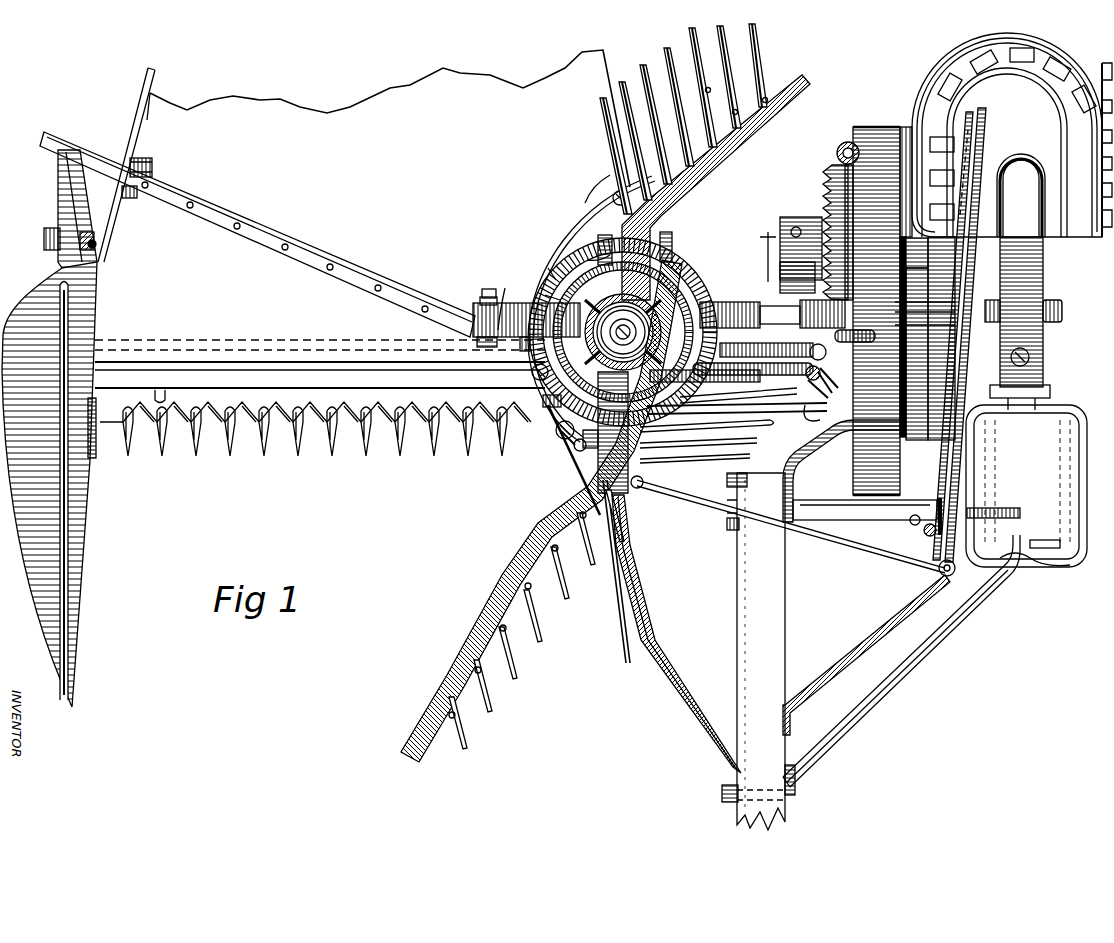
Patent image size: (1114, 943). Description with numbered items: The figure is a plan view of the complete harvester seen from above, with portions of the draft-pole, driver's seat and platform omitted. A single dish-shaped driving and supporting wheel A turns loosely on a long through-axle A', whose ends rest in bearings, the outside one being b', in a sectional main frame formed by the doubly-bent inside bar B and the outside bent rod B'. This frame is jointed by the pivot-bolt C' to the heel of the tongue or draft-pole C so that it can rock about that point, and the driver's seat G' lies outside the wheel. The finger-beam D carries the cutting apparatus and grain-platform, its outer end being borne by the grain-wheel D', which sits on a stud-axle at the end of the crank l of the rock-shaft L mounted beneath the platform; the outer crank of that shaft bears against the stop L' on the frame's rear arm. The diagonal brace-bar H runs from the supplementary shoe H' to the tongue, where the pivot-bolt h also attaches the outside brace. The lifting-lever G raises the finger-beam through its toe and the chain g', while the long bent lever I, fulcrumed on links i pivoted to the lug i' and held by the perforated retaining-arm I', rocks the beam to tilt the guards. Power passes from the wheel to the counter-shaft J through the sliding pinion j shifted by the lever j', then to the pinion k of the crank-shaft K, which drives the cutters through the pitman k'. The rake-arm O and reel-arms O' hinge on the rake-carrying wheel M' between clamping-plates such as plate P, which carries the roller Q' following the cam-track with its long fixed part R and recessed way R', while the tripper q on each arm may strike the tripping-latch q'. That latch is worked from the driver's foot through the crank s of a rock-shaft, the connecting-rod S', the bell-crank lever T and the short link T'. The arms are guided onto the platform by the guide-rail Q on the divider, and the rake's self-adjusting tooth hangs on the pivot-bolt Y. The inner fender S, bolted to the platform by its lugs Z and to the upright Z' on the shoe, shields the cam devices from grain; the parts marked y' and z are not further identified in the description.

The guide-rail Q is at (56, 484).
The grain-wheel D' is at (67, 209).
The inner crank-arm of rock-shaft l is at (96, 255).
The rake-arm O is at (310, 239).
The headed pivot-bolt Y is at (146, 164).
The clamp y' is at (149, 181).
The tripper-piece q is at (508, 295).
The tripping-latch q' is at (513, 349).
The rock-shaft L is at (320, 336).
The finger-beam D is at (461, 400).
The inner fence or fender S is at (591, 419).
The roller Q' is at (650, 233).
The main fixed track of cam R is at (623, 332).
The side clamping-plate P is at (660, 300).
The base-flanges of fender Z is at (520, 375).
The rake-carrying wheel M' is at (650, 239).
The bolt z is at (614, 184).
The reel-arm O' is at (605, 393).
The upright on shoe Z' is at (545, 447).
The short link-rod T' is at (583, 455).
The supplementary shoe H' is at (571, 466).
The bell-crank lever T is at (788, 522).
The recessed part of cam-track R' is at (707, 430).
The pitman k' is at (733, 433).
The counter-shaft J is at (854, 255).
The stop arm L' is at (742, 230).
The endwise-moving pinion j is at (867, 232).
The clutch-shifting lever j' is at (848, 136).
The crank-shaft pinion k is at (859, 232).
The crank-shaft K is at (876, 311).
The driving and main supporting wheel A is at (914, 283).
The lifting-lever G is at (857, 325).
The chain g' is at (838, 406).
The inside frame-bar B is at (844, 471).
The outside bent frame-bar B' is at (832, 511).
The connecting-rod S' is at (925, 536).
The fulcrum links i is at (915, 508).
The lug i' is at (935, 508).
The draft-pole C is at (756, 651).
The pivot-bolt C' is at (723, 534).
The pivot-bolt h is at (719, 793).
The diagonal brace-bar H is at (676, 634).
The tilting lever I is at (894, 421).
The retaining-arm I' is at (982, 379).
The front crank of rock-shaft s is at (951, 580).
The driver's seat G' is at (1012, 135).
The main axle A' is at (1047, 312).
The outside axle bearing b' is at (1023, 299).